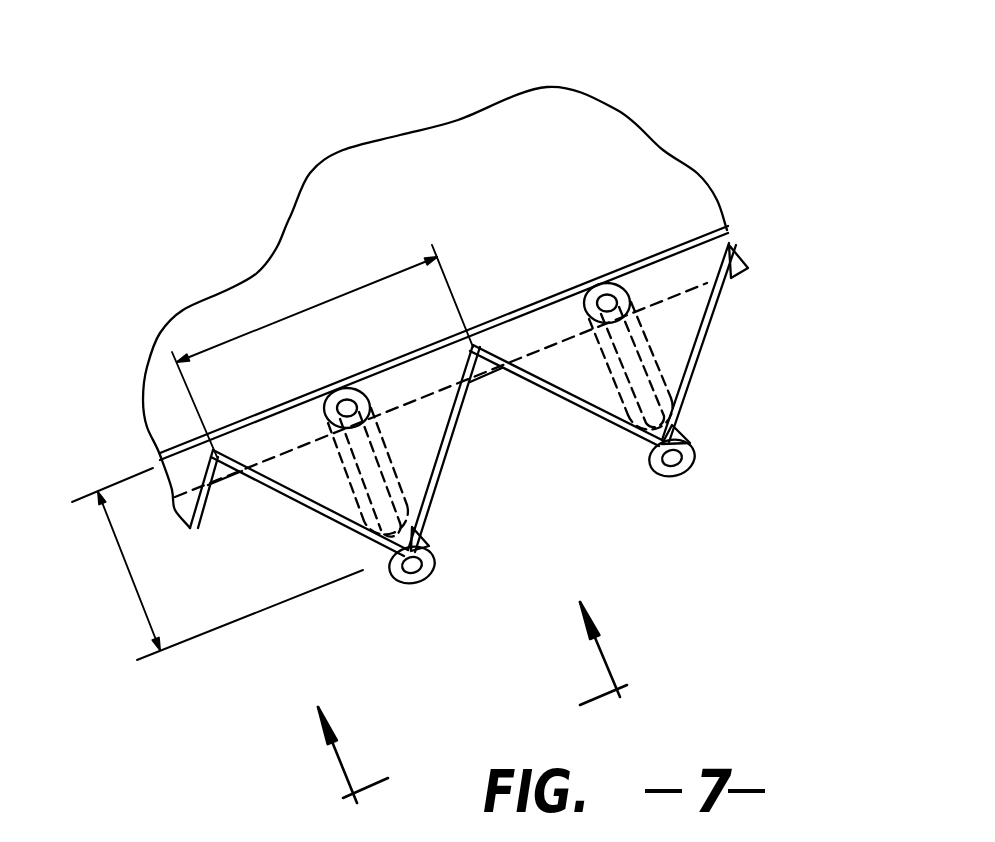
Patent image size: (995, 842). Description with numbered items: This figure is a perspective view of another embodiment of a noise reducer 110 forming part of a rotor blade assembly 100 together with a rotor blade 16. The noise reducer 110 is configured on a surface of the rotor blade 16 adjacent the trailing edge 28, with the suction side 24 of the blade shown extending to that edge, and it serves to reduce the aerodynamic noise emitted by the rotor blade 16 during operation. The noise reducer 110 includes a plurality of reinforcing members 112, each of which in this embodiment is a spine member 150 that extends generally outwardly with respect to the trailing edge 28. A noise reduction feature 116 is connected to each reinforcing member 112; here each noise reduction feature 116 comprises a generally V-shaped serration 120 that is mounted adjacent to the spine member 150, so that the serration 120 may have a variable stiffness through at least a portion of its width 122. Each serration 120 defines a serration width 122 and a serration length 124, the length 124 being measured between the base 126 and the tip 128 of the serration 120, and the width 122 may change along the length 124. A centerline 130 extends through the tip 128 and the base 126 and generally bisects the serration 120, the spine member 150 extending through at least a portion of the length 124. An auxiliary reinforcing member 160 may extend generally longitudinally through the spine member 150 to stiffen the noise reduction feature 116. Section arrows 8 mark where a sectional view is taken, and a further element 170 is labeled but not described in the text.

The section line 8- 8 is at (450, 691).
The rotor blade 16 is at (602, 90).
The suction side 24 is at (642, 160).
The trailing edge 28 is at (722, 231).
The rotor blade assembly 100 is at (738, 100).
The noise reducer 110 is at (775, 305).
The reinforcing member 112 is at (388, 592).
The noise reduction feature 116 is at (413, 423).
The serration 120 is at (413, 458).
The serration width 122 is at (260, 327).
The serration length 124 is at (123, 565).
The base 126 is at (405, 360).
The tip 128 is at (425, 545).
The centerline 130 is at (637, 345).
The spine member 150 is at (413, 585).
The auxiliary reinforcing member 160 is at (423, 573).
The track 170 is at (864, 314).